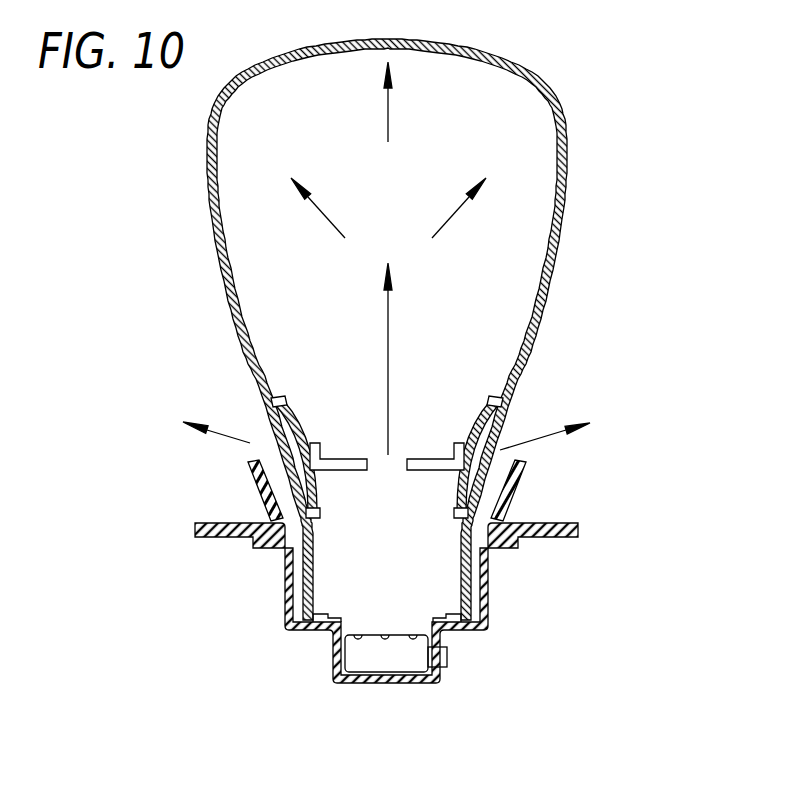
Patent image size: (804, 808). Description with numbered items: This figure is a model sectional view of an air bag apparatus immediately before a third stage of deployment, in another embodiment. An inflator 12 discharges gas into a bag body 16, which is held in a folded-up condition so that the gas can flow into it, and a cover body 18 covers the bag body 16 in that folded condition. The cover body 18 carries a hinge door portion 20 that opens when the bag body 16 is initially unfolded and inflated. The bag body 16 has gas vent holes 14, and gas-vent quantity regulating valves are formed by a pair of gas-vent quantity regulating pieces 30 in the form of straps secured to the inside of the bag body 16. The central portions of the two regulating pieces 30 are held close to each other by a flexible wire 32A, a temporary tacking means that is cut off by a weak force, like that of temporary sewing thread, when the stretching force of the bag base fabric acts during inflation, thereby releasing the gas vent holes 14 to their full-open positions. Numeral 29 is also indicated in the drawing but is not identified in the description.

The inflator 12 is at (372, 650).
The gas vent hole 14 is at (297, 462).
The bag body 16 is at (548, 82).
The cover body 18 is at (560, 523).
The hinge door portion 20 is at (257, 498).
The vent opening 29 is at (503, 412).
The gas-vent quantity regulating piece 30 is at (305, 420).
The flexible wire 32A is at (343, 470).